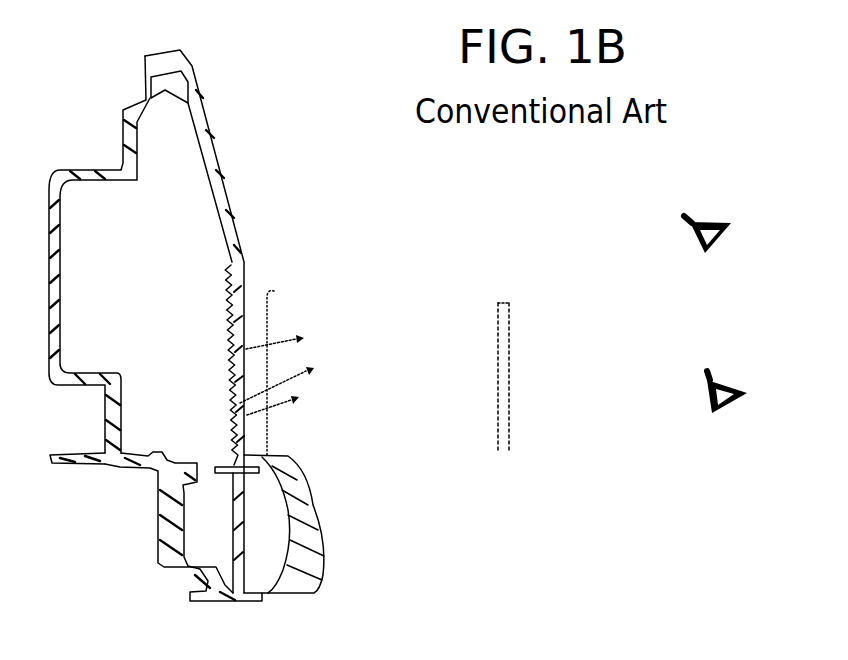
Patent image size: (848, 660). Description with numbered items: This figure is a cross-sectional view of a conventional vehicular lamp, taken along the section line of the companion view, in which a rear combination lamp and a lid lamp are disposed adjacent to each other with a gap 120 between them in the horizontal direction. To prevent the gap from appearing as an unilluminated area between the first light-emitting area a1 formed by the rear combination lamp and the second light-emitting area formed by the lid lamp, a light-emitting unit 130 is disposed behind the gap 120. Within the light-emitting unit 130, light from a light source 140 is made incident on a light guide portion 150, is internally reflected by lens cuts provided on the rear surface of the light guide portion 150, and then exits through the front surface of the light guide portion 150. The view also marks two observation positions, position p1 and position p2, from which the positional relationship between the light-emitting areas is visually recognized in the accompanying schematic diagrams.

The gap 120 is at (547, 350).
The light-emitting unit 130 is at (274, 291).
The light source 140 is at (230, 458).
The light guide portion 150 is at (231, 378).
The first light-emitting area a1 is at (512, 371).
The position p1 is at (747, 393).
The position p2 is at (730, 222).